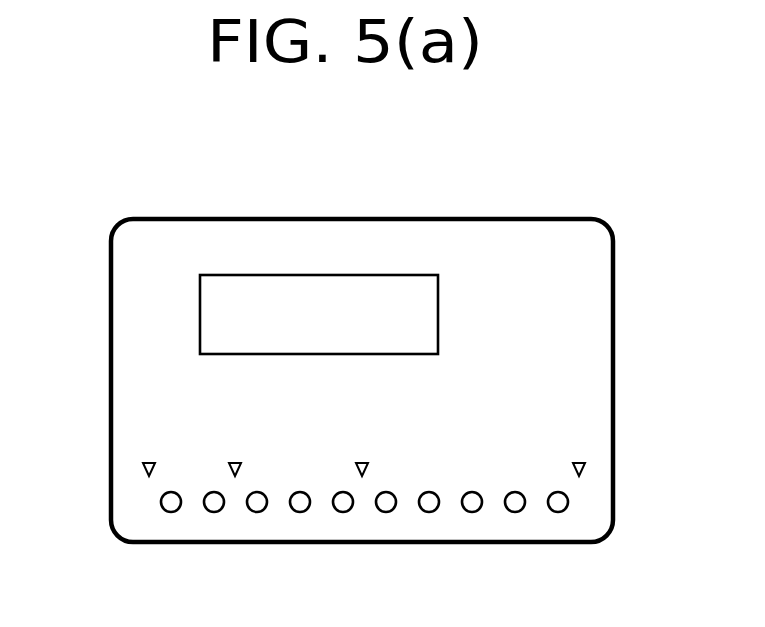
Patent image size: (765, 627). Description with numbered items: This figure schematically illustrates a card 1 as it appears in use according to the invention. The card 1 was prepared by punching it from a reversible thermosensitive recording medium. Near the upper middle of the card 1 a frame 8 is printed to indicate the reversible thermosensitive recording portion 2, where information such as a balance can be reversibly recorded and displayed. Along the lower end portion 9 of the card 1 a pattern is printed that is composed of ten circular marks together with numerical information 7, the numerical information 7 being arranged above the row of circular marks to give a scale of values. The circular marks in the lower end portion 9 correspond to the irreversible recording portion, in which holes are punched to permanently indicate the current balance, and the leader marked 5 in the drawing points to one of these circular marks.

The card 1 is at (600, 278).
The reversible thermosensitive recording portion 2 is at (417, 290).
The holes 5 is at (569, 502).
The numerical information 7 is at (607, 462).
The frame 8 is at (207, 317).
The lower end portion 9 is at (363, 482).